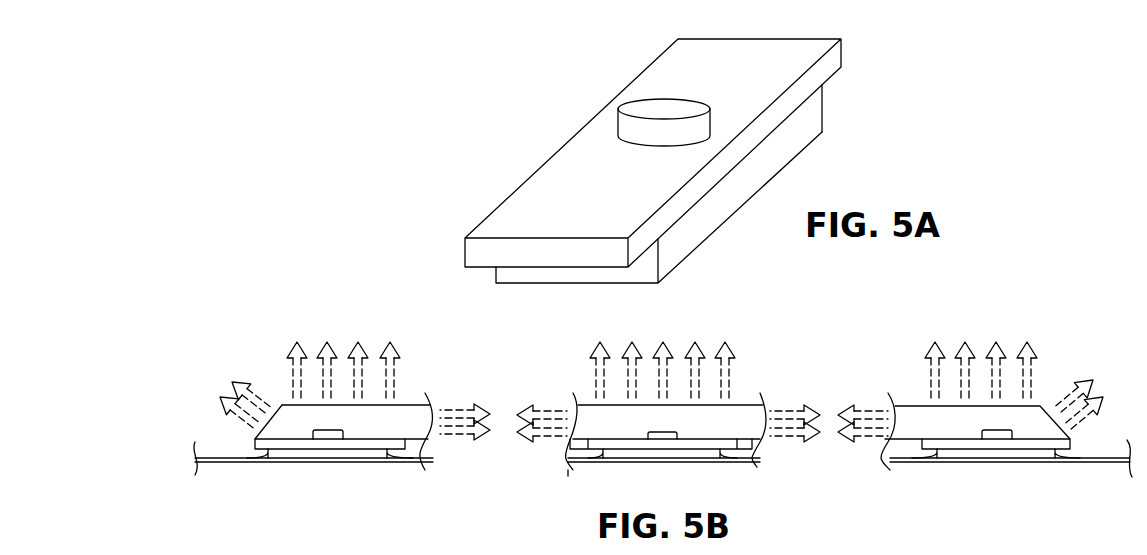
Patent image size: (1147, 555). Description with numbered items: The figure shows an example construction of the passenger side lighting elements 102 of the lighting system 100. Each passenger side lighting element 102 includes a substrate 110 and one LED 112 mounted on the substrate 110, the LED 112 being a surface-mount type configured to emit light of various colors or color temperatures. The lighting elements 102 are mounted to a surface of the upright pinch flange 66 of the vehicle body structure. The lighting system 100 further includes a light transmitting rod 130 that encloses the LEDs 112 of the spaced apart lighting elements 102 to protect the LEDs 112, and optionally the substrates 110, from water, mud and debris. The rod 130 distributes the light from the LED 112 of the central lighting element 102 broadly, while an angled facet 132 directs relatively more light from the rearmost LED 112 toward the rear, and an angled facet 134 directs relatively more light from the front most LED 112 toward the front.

In FIG. 5B, the lighting system 100 is at (267, 333).
In FIG. 5A, the passenger side lighting element 102 is at (804, 143).
In FIG. 5B, the passenger side lighting element 102 is at (255, 453).
In FIG. 5A, the substrate 110 is at (822, 107).
In FIG. 5B, the substrate 110 is at (403, 453).
In FIG. 5A, the LED 112 is at (652, 112).
In FIG. 5B, the LED 112 is at (662, 432).
In FIG. 5B, the light transmitting rod 130 is at (745, 403).
In FIG. 5B, the angled facet 132 is at (280, 405).
In FIG. 5B, the angled facet 134 is at (1040, 400).
In FIG. 5B, the pinch flange 66 is at (575, 471).